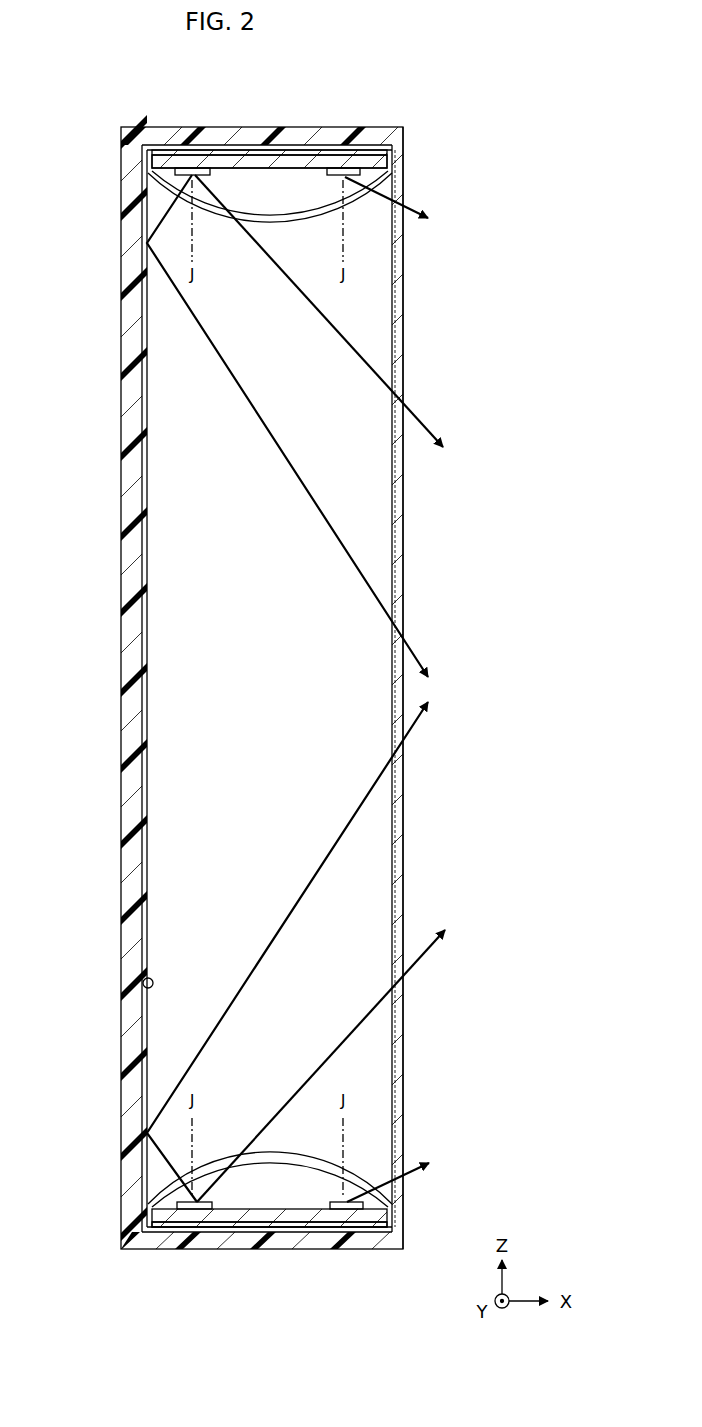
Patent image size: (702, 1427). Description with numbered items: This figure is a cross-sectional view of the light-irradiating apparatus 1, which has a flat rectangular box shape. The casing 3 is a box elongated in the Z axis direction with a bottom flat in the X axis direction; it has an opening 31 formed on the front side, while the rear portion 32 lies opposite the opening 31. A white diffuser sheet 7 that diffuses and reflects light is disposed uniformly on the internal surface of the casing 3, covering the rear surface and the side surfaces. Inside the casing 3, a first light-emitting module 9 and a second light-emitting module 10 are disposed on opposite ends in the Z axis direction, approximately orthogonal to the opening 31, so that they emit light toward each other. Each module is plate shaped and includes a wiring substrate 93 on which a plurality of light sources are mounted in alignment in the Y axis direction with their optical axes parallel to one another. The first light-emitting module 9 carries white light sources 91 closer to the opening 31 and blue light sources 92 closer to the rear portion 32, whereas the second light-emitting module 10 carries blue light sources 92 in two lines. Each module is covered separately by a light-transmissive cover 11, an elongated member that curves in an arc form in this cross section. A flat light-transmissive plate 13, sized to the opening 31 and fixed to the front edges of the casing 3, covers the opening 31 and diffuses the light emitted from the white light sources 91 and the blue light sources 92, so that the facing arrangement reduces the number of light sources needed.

The light-irradiating apparatus 1 is at (402, 116).
The casing 3 is at (142, 1112).
The diffuser sheet 7 is at (235, 145).
The first light-emitting module 9 is at (310, 1258).
The second light-emitting module 10 is at (312, 693).
The light-transmissive cover 11 is at (155, 190).
The light-transmissive plate 13 is at (398, 1042).
The opening 31 is at (400, 1078).
The rear portion 32 is at (142, 985).
The white light source 91 is at (345, 1250).
The blue light source 92 is at (188, 168).
The wiring substrate 93 is at (270, 165).